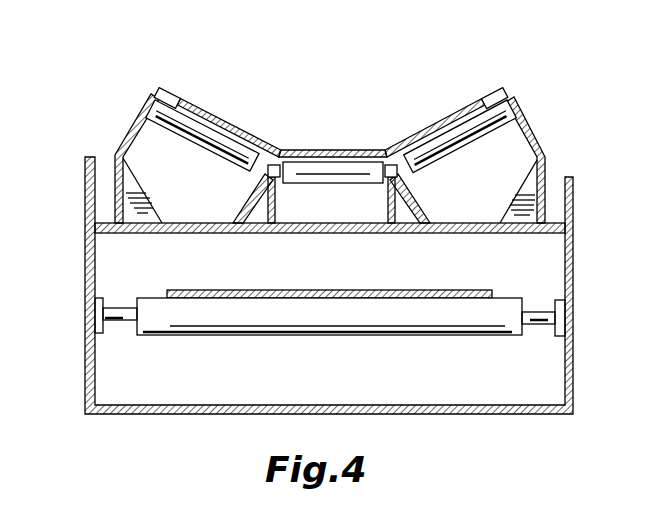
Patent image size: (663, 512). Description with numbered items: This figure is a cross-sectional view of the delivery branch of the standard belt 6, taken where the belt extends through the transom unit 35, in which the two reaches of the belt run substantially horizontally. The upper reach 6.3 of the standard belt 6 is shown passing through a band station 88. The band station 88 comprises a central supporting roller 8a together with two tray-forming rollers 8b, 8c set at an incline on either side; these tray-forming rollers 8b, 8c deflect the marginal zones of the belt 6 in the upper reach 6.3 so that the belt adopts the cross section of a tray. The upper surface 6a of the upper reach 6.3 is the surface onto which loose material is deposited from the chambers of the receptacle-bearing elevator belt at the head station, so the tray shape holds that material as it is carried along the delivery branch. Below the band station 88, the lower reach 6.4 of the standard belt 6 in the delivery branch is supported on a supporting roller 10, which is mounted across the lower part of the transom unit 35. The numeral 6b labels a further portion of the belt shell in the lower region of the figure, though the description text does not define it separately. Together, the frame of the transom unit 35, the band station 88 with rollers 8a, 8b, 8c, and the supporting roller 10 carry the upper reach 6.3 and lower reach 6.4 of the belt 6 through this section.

The transom unit 35 is at (78, 115).
The standard belt 6 is at (198, 96).
The upper surface 6a is at (330, 150).
The upper reach 6.3 is at (463, 112).
The lower reach 6.4 is at (332, 291).
The shell section of return roller unit 6b is at (392, 291).
The central supporting roller 8a is at (327, 176).
The tray-forming roller 8b is at (190, 127).
The tray-forming roller 8c is at (462, 130).
The supporting roller 10 is at (505, 312).
The band station 88 is at (548, 137).